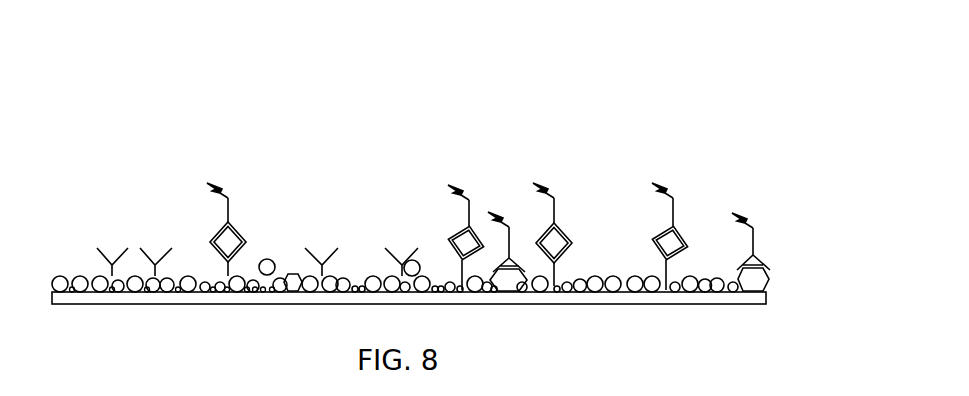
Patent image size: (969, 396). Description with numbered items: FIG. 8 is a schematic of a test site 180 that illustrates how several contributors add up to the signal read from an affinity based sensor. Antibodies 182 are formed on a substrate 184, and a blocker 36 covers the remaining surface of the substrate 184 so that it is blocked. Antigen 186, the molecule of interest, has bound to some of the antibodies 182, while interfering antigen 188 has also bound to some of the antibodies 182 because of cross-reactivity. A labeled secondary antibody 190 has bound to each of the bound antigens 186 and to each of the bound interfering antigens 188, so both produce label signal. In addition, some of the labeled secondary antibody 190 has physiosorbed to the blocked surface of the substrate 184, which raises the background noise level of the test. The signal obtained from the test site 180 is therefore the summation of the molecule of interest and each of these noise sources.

The test site 180 is at (731, 132).
The antibodies 182 is at (124, 254).
The substrate 184 is at (766, 297).
The antigen 186 is at (208, 243).
The interfering antigen 188 is at (448, 248).
The labeled secondary antibody 190 is at (212, 186).
The blocker 36 is at (282, 266).